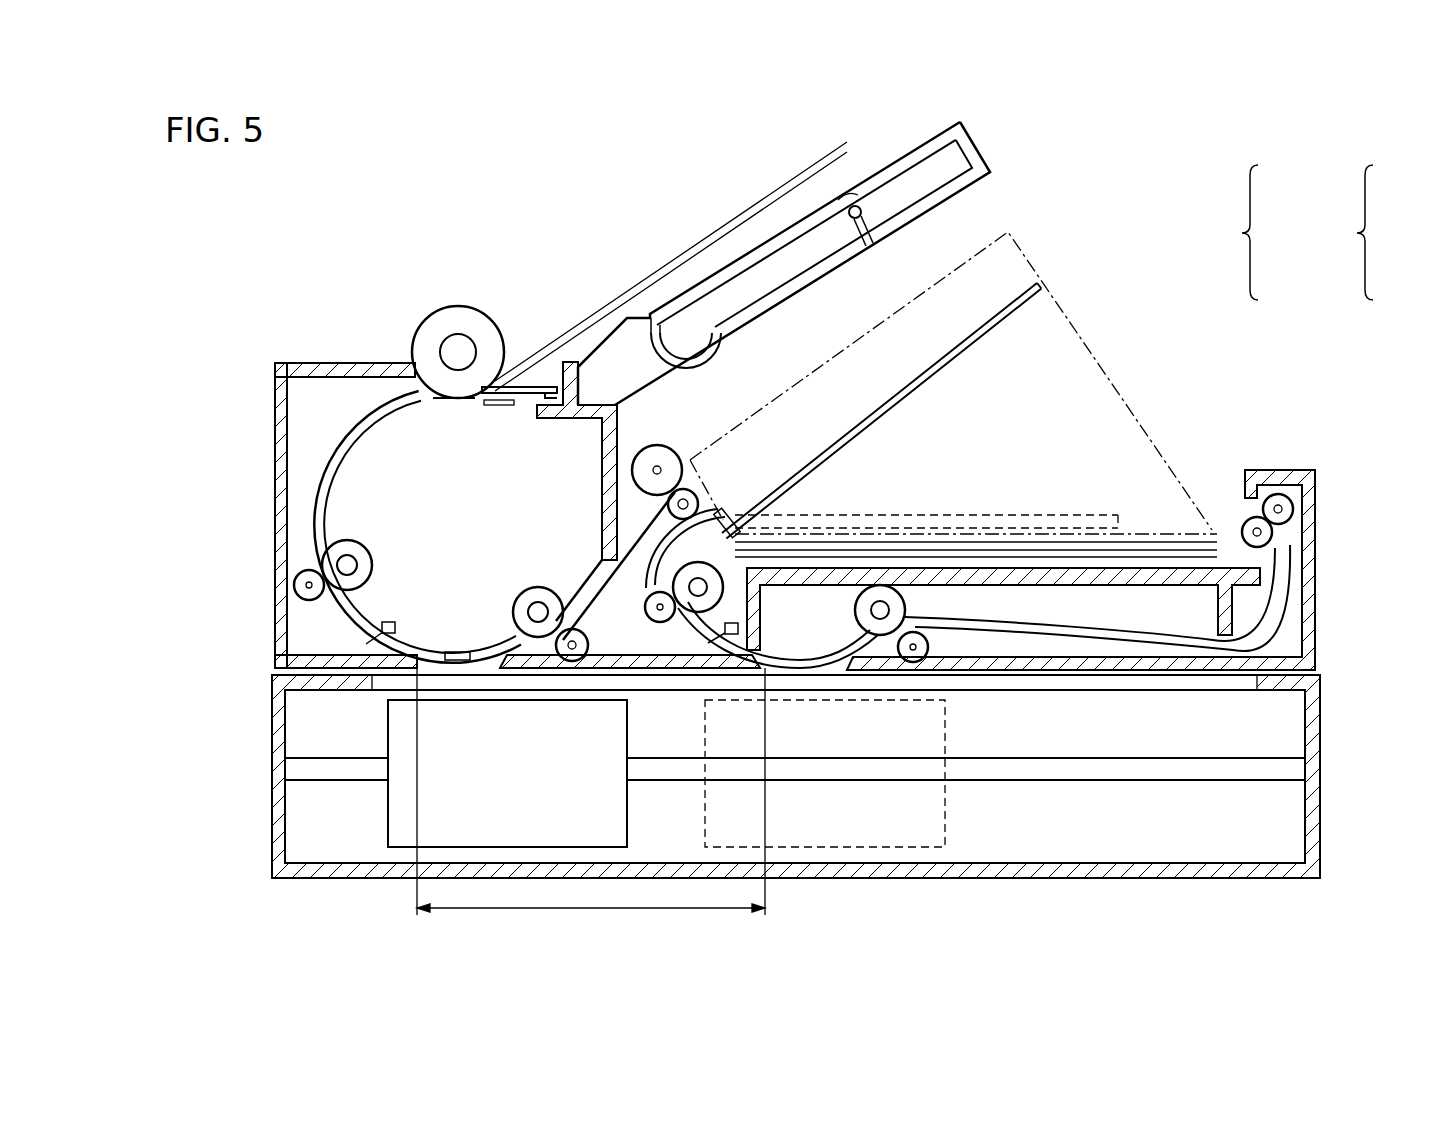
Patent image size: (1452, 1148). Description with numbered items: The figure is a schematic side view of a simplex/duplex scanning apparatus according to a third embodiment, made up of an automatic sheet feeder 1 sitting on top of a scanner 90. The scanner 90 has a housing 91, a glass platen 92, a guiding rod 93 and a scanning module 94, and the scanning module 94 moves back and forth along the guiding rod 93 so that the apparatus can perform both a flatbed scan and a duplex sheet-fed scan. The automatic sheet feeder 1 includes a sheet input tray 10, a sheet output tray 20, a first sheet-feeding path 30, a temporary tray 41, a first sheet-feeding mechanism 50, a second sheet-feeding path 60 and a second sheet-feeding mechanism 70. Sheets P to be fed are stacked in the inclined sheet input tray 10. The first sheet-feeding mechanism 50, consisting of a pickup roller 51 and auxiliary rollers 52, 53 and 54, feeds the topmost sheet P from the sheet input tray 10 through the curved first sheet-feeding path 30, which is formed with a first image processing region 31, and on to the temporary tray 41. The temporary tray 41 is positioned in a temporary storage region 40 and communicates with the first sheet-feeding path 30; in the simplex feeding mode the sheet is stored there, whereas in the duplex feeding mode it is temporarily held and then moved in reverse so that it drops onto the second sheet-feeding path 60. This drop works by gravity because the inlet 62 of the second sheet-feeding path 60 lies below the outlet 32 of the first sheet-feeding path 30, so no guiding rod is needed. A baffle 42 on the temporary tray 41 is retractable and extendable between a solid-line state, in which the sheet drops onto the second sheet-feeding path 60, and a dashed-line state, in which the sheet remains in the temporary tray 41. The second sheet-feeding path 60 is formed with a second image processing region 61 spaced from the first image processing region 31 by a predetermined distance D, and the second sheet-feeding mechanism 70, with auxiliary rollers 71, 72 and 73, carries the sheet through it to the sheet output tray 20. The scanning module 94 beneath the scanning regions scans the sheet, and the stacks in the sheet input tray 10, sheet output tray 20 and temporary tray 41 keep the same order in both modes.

The automatic sheet feeder 1 is at (266, 360).
The sheet input tray 10 is at (958, 184).
The sheet P is at (690, 242).
The sheet output tray 20 is at (1226, 568).
The first sheet-feeding path 30 is at (330, 458).
The first image processing region 31 is at (457, 650).
The outlet 32 is at (680, 455).
The temporary storage region 40 is at (1068, 327).
The temporary tray 41 is at (1048, 282).
The baffle 42 is at (718, 500).
The first sheet-feeding mechanism 50 is at (1251, 231).
The pickup roller 51 is at (438, 312).
The auxiliary roller 52 is at (300, 583).
The auxiliary roller 53 is at (560, 648).
The auxiliary roller 54 is at (672, 500).
The second sheet-feeding path 60 is at (1036, 632).
The second image processing region 61 is at (797, 668).
The inlet 62 is at (612, 548).
The second sheet-feeding mechanism 70 is at (1366, 236).
The auxiliary roller 71 is at (692, 600).
The auxiliary roller 72 is at (905, 645).
The auxiliary roller 73 is at (1270, 530).
The scanner 90 is at (264, 718).
The housing 91 is at (272, 830).
The glass platen 92 is at (380, 692).
The guiding rod 93 is at (1098, 766).
The scanning module 94 is at (386, 812).
The predetermined distance D is at (591, 791).